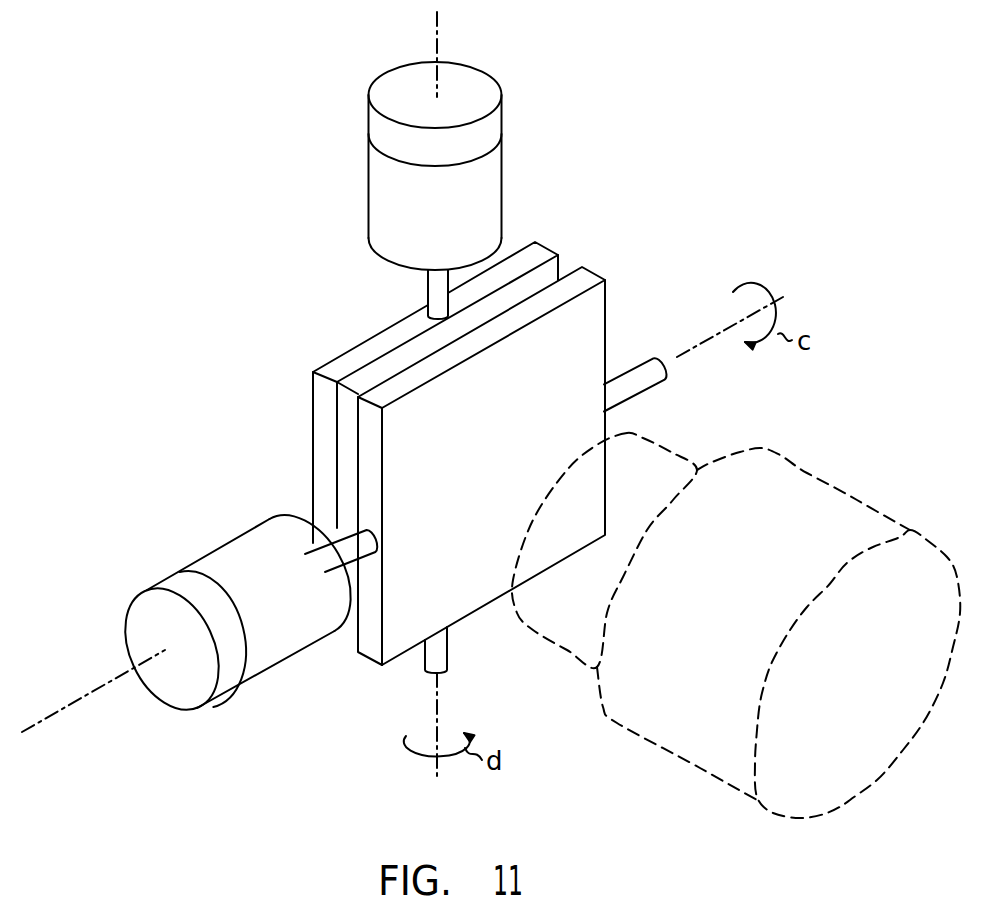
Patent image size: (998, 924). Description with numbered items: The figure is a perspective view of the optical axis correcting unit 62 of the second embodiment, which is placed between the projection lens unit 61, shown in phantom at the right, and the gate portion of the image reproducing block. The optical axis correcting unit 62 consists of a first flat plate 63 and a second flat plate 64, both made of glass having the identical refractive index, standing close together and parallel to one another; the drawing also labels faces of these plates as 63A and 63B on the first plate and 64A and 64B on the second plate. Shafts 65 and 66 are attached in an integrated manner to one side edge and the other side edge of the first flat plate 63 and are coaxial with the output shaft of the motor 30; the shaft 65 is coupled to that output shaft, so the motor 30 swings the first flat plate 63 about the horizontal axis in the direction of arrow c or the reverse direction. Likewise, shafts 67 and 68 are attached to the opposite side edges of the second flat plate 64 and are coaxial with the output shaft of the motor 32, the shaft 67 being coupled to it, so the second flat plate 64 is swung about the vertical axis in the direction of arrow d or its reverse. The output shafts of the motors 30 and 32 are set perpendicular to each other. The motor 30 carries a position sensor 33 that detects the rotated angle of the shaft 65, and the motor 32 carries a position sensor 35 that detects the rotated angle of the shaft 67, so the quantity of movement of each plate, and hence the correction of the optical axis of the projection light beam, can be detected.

The motor 30 is at (280, 661).
The motor 32 is at (507, 180).
The position sensor 33 is at (190, 698).
The position sensor 35 is at (474, 85).
The projection lens unit 61 is at (893, 512).
The optical axis correcting unit 62 is at (664, 212).
The first flat plate 63 is at (456, 446).
The end face of mirror plate 63 63A is at (355, 427).
The front face of mirror plate 63 63B is at (398, 447).
The second flat plate 64 is at (433, 371).
The end face of mirror plate 64 64A is at (312, 388).
The front face of mirror plate 64 64B is at (352, 393).
The shaft 65 is at (350, 563).
The shaft 66 is at (643, 363).
The shaft 67 is at (428, 290).
The shaft 68 is at (448, 650).